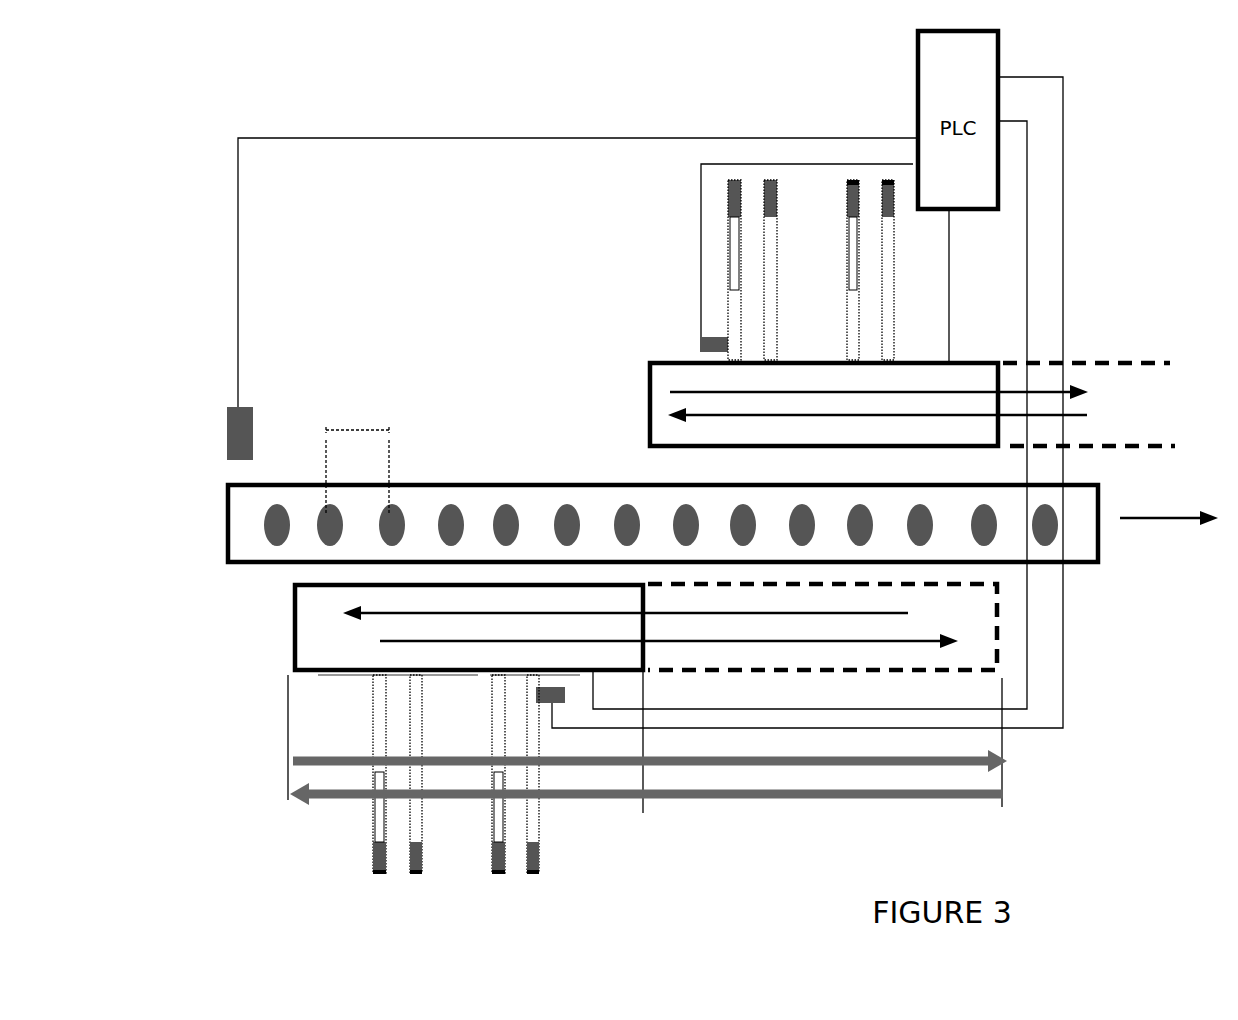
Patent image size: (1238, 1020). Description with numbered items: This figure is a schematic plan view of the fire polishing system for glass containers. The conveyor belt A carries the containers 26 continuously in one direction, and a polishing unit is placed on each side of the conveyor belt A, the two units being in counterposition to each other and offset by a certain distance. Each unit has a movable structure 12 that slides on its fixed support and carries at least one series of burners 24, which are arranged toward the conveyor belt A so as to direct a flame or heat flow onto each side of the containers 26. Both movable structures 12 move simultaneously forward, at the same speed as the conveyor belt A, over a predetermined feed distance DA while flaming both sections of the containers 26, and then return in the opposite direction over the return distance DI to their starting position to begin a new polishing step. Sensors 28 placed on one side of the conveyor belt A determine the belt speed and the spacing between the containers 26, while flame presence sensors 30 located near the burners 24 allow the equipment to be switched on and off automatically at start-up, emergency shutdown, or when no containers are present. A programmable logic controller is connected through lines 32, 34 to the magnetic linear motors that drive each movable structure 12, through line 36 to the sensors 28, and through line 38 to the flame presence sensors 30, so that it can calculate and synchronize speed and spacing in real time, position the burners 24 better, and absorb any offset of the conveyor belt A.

The movable structure 12 is at (952, 378).
The burners 24 is at (725, 250).
The containers 26 is at (268, 527).
The sensors 28 is at (227, 433).
The flame presence sensors 30 is at (700, 344).
The line 32 is at (953, 277).
The line 34 is at (1032, 640).
The line 36 is at (412, 137).
The line 38 is at (700, 250).
The conveyor belt A is at (250, 517).
The feed distance DA is at (658, 625).
The return distance DI is at (639, 758).